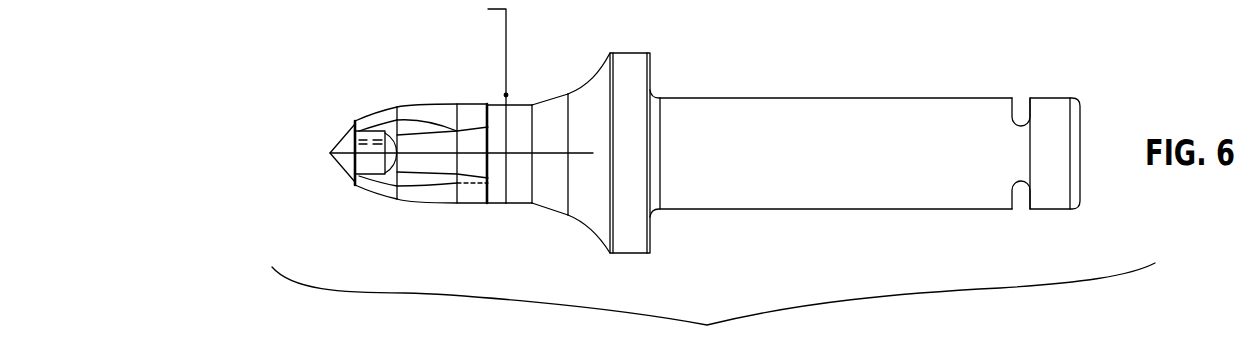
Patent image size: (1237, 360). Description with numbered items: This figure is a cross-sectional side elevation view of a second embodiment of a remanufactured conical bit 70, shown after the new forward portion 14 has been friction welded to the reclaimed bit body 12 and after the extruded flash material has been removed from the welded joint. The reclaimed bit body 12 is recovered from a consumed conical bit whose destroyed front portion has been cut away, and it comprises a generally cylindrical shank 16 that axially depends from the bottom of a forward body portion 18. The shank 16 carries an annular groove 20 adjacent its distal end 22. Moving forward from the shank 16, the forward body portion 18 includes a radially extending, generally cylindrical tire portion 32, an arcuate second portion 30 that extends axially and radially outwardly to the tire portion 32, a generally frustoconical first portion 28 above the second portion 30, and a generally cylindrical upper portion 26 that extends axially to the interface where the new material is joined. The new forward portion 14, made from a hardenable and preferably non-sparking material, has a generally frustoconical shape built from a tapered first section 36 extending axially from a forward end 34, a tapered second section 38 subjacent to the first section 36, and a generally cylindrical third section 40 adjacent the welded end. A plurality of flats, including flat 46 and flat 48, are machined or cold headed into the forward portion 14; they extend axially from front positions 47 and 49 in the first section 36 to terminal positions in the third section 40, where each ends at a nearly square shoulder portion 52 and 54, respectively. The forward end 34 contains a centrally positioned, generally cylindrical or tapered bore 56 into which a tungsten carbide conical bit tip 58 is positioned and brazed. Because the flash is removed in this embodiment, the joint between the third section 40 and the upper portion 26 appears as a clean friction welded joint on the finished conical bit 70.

The reclaimed bit body 12 is at (886, 24).
The new forward portion 14 is at (321, 46).
The shank 16 is at (763, 98).
The forward body portion 18 is at (596, 38).
The annular groove 20 is at (1021, 123).
The distal end 22 is at (1082, 134).
The upper portion 26 is at (520, 117).
The first portion 28 is at (547, 110).
The second portion 30 is at (588, 208).
The tire portion 32 is at (627, 243).
The forward end 34 is at (353, 125).
The first section 36 is at (360, 181).
The second section 38 is at (401, 177).
The third section 40 is at (493, 196).
The flat 46 is at (432, 190).
The front position 47 is at (391, 177).
The flat 48 is at (435, 113).
The front position 49 is at (389, 118).
The shoulder portion 52 is at (483, 193).
The shoulder portion 54 is at (483, 113).
The bore 56 is at (350, 153).
The conical bit tip 58 is at (343, 149).
The conical bit 70 is at (713, 310).